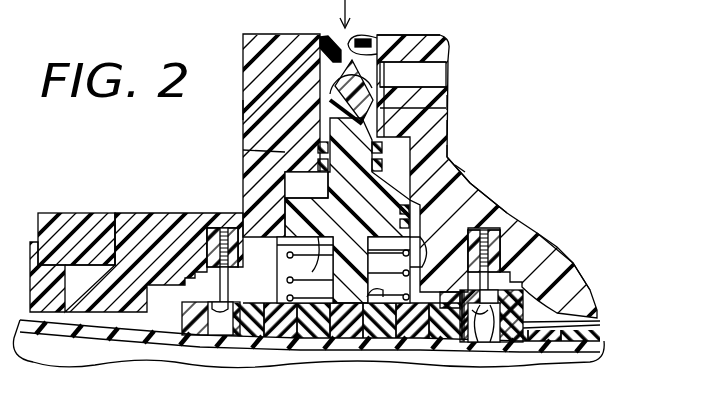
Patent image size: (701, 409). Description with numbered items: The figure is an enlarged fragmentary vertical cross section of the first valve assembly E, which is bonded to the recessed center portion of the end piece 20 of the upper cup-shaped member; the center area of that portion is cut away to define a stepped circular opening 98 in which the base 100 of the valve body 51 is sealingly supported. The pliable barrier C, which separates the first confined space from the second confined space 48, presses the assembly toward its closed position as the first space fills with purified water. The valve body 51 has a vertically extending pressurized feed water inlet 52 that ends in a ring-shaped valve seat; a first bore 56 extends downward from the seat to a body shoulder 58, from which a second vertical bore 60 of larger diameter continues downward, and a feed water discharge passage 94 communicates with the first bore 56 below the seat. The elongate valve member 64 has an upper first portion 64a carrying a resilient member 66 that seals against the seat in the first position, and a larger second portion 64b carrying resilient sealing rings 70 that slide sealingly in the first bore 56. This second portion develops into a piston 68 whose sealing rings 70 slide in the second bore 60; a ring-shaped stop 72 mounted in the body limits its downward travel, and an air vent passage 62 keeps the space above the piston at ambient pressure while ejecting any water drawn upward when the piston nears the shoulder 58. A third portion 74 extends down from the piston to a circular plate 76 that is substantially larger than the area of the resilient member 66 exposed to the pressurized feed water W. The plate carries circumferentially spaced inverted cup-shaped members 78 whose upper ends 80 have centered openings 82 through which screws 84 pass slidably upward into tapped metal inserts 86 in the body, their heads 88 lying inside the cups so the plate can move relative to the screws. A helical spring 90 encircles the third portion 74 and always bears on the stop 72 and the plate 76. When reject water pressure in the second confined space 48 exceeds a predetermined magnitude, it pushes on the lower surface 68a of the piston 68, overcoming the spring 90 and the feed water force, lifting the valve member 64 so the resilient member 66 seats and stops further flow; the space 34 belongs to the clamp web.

The end piece 20 is at (66, 213).
The stepped circular opening 98 is at (118, 232).
The base 100 is at (117, 303).
The barrier C is at (178, 344).
The second confined space 48 is at (218, 363).
The body shoulder 58 is at (300, 168).
The valve assembly E is at (243, 110).
The valve body 51 is at (286, 183).
The second portion 64b is at (285, 198).
The piston 68 is at (427, 182).
The helical spring 90 is at (312, 300).
The lower surface 68a is at (288, 280).
The ring shaped stop 72 is at (422, 250).
The third portion 74 is at (370, 290).
The pressurized feed water W is at (352, 396).
The space 34 is at (353, 42).
The pressurized feed water inlet 52 is at (376, 42).
The valve member 64 is at (373, 110).
The first portion 64a is at (447, 82).
The second vertical bore 60 is at (470, 185).
The resilient member 66 is at (420, 40).
The feed water discharge passage 94 is at (448, 104).
The first bore 56 is at (448, 130).
The resilient sealing rings 70 is at (449, 152).
The air vent passage 62 is at (455, 165).
The screws 84 is at (560, 242).
The inverted cup shape member 78 is at (580, 262).
The circular plate 76 is at (600, 323).
The tapped metal inserts 86 is at (500, 237).
The heads 88 is at (494, 345).
The centered openings 82 is at (477, 348).
The upper ends 80 is at (450, 345).